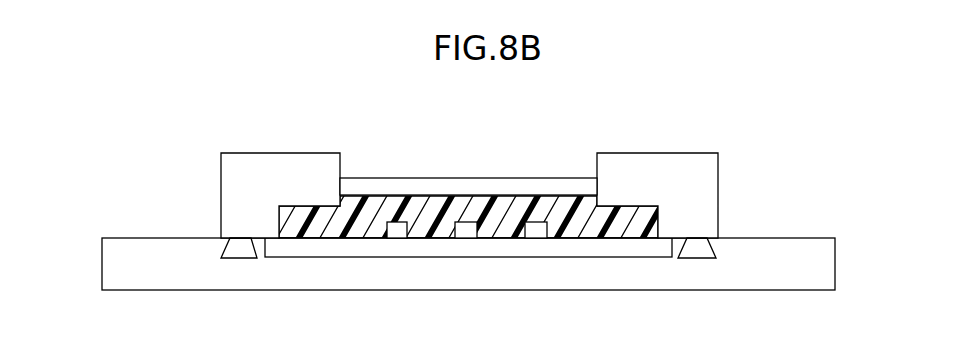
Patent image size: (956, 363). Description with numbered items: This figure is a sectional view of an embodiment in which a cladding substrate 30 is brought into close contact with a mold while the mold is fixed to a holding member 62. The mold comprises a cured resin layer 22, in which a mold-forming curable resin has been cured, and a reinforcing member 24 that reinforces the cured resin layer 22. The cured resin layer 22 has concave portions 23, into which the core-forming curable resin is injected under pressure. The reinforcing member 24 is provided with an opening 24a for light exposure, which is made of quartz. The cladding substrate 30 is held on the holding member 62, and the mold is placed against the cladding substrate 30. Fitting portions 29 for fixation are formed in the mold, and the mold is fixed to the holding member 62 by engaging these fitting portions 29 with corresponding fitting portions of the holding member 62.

The cured resin layer 22 is at (610, 233).
The concave portions 23 is at (535, 233).
The reinforcing member 24 is at (645, 167).
The opening for light exposure 24a is at (408, 187).
The fitting portions 29 is at (695, 252).
The cladding substrate 30 is at (313, 252).
The holding member 62 is at (182, 278).